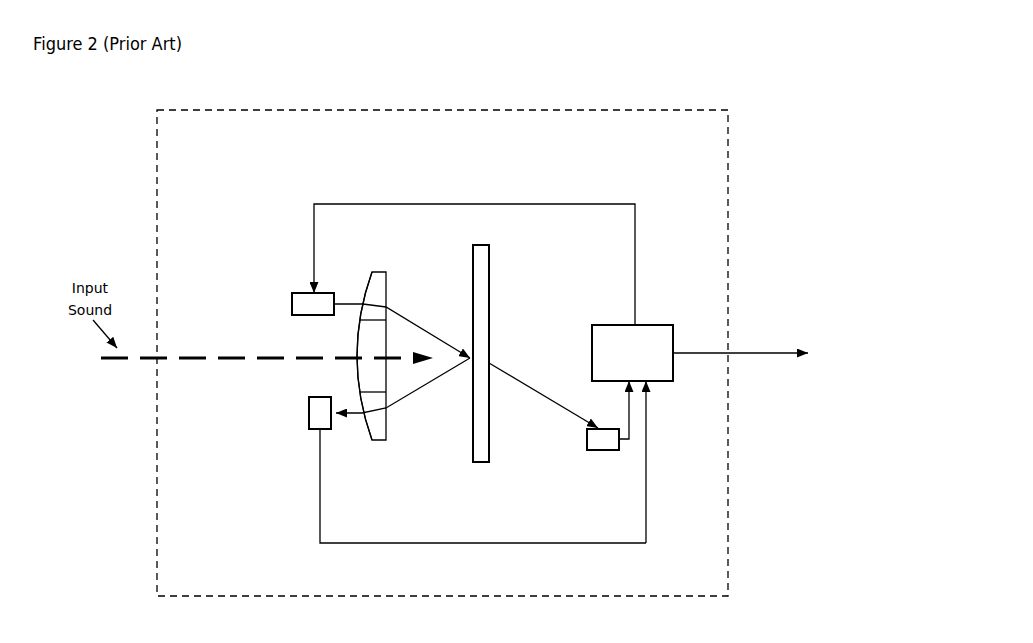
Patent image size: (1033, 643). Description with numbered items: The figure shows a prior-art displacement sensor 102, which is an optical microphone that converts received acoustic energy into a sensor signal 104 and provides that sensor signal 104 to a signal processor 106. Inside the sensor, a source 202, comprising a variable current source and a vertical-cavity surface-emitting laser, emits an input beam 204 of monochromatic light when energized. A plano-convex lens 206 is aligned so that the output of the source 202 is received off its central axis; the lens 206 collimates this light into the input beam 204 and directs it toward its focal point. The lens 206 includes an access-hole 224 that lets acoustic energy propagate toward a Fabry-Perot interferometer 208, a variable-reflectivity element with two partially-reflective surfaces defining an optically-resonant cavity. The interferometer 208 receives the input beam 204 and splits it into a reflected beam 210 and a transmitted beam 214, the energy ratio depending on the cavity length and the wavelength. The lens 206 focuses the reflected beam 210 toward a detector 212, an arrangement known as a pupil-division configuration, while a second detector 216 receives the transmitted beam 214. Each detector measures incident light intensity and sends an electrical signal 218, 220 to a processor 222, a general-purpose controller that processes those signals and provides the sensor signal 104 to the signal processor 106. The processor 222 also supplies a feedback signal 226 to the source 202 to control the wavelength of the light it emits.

The displacement sensor 102 is at (442, 353).
The sensor signal 104 is at (757, 323).
The signal processor 106 is at (825, 387).
The source 202 is at (287, 303).
The input beam 204 is at (402, 325).
The lens 206 is at (398, 343).
The Fabry-Perot interferometer 208 is at (516, 353).
The reflected beam 210 is at (403, 398).
The detector 212 is at (441, 470).
The transmitted beam 214 is at (543, 400).
The detector 216 is at (579, 454).
The electrical signal 218 is at (673, 462).
The electrical signal 220 is at (660, 410).
The processor 222 is at (624, 353).
The access-hole 224 is at (304, 356).
The feedback signal 226 is at (508, 264).